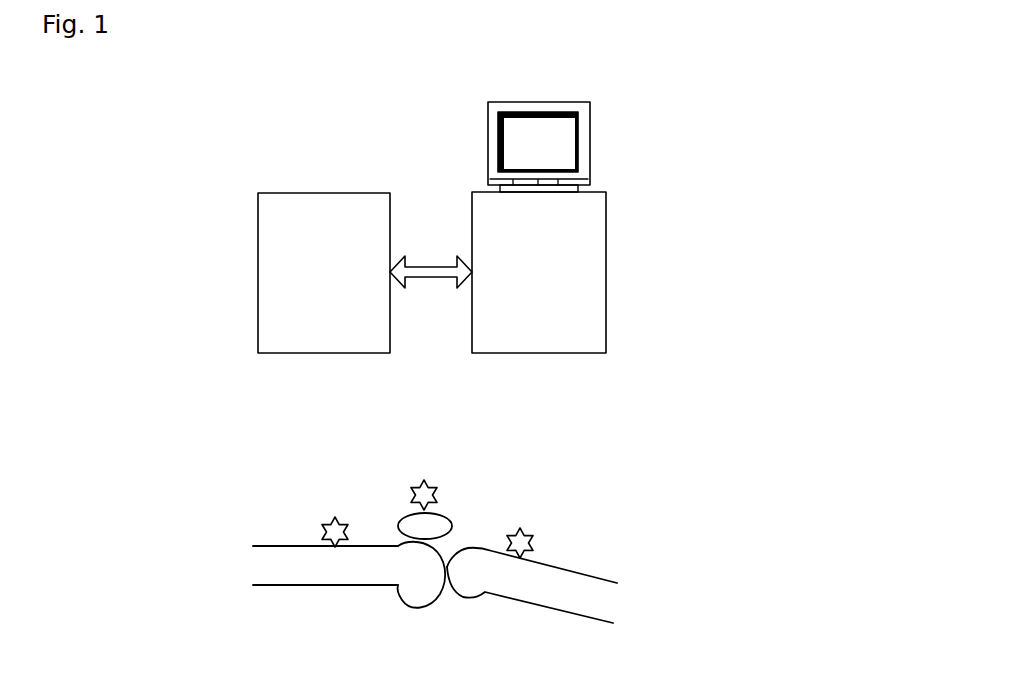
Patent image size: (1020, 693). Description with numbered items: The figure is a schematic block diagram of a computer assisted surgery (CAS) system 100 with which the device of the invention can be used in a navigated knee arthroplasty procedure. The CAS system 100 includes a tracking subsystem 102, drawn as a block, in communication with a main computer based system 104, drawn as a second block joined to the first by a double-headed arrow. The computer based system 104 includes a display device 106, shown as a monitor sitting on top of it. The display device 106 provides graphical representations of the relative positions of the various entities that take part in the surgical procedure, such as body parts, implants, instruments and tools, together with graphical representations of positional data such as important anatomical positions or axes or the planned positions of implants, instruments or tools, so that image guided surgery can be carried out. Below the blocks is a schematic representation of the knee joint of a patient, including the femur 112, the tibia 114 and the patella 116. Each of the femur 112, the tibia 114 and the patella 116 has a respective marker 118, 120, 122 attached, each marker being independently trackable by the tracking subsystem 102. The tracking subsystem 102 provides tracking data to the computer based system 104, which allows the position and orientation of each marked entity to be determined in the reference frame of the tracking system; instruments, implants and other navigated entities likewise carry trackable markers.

The computer assisted surgery (CAS) system 100 is at (669, 62).
The tracking subsystem 102 is at (258, 228).
The main computer based system 104 is at (606, 243).
The display device 106 is at (590, 152).
The femur 112 is at (283, 546).
The tibia 114 is at (588, 573).
The patella 116 is at (450, 518).
The marker 118 is at (345, 520).
The marker 120 is at (528, 531).
The marker 122 is at (430, 485).